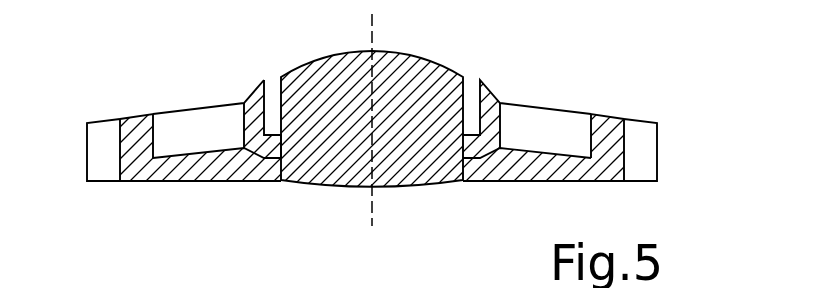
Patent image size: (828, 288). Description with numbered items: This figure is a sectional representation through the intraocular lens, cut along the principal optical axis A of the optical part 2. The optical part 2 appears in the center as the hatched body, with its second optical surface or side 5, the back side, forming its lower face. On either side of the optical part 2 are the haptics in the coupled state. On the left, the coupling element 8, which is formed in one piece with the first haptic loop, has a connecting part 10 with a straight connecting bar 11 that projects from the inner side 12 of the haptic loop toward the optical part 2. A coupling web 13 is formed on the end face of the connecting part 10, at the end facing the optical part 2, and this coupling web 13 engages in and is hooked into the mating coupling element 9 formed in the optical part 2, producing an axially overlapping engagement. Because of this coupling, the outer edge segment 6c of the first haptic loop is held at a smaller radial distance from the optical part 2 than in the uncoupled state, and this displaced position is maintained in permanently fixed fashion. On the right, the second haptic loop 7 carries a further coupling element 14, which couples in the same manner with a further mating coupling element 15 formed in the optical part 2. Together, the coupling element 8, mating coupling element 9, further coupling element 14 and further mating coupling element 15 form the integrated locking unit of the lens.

The optical part 2 is at (327, 47).
The second optical surface or side 5 is at (408, 188).
The principal optical axis A is at (372, 34).
The outer edge segment 6c is at (116, 150).
The second haptic loop 7 is at (634, 142).
The coupling element 8 is at (220, 144).
The mating coupling element 9 is at (274, 86).
The connecting part 10 is at (233, 187).
The connecting bar 11 is at (185, 182).
The inner side 12 is at (160, 134).
The coupling web 13 is at (276, 150).
The further coupling element 14 is at (554, 135).
The further mating coupling element 15 is at (473, 84).